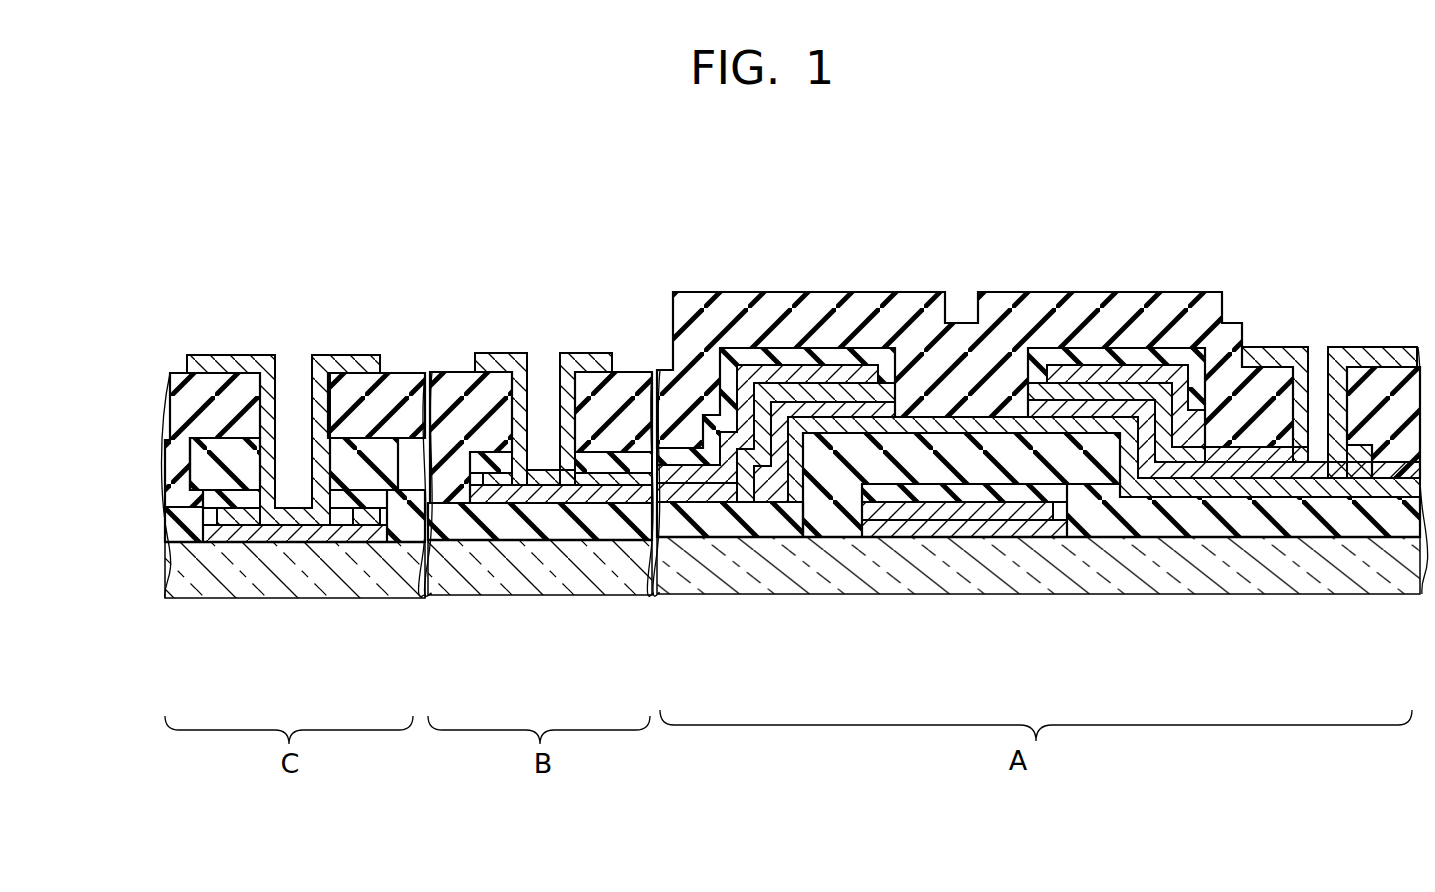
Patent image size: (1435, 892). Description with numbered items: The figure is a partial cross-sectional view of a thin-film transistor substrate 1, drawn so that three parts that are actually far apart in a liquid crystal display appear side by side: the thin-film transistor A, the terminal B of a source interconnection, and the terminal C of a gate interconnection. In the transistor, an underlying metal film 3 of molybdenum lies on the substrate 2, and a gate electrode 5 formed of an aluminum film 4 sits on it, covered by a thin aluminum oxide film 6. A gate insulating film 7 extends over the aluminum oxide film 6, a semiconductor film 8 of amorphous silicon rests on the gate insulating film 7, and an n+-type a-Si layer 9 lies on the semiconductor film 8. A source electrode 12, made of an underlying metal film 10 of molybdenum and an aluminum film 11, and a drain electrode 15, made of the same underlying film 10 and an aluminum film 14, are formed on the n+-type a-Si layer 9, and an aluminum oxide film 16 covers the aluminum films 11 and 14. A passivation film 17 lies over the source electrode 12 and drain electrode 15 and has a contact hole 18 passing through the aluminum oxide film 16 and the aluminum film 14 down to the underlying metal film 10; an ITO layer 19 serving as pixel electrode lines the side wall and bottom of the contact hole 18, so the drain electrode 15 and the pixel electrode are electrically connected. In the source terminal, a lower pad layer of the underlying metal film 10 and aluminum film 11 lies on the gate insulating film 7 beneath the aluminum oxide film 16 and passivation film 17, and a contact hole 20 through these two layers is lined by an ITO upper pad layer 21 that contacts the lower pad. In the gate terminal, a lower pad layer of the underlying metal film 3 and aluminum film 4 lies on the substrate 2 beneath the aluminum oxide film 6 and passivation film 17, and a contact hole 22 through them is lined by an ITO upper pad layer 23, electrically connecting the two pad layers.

The thin film transistor array substrate 1 is at (963, 238).
The substrate 2 is at (1398, 556).
The underlying metal film 3 is at (318, 534).
The aluminum film 4 is at (372, 523).
The gate electrode 5 is at (964, 493).
The aluminum oxide film 6 is at (230, 502).
The gate insulating film 7 is at (192, 526).
The semiconductor film 8 is at (1098, 446).
The n+-type a-Si layer 9 is at (780, 478).
The underlying metal film 10 is at (603, 493).
The aluminum film 11 is at (633, 474).
The source electrode 12 is at (697, 492).
The aluminum film 14 is at (1261, 468).
The drain electrode 15 is at (1087, 451).
The aluminum oxide film 16 is at (500, 468).
The passivation film 17 is at (224, 393).
The contact hole 18 is at (1343, 468).
The ITO layer 19 is at (1366, 356).
The contact hole 20 is at (570, 479).
The upper pad layer 21 is at (586, 356).
The contact hole 22 is at (268, 520).
The upper pad layer 23 is at (338, 356).